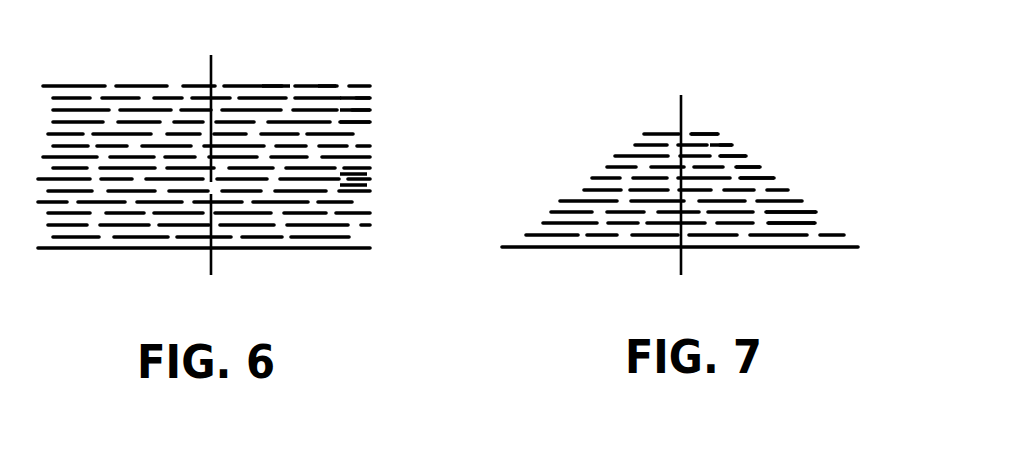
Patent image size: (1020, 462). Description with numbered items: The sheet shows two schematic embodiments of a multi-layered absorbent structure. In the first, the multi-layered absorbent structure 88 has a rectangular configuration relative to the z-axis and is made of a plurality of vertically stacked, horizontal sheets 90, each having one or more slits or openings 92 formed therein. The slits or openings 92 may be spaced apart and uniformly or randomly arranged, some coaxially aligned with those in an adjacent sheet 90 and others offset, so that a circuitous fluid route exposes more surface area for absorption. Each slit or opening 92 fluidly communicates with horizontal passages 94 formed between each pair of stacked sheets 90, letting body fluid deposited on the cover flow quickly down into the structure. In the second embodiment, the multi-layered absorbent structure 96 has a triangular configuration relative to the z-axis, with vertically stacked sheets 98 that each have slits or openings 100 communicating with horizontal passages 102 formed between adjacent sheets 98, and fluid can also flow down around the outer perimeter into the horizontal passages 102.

In FIG. 6, the multi-layered absorbent structure 88 is at (386, 55).
In FIG. 6, the sheet 90 is at (370, 98).
In FIG. 6, the slit or opening 92 is at (327, 86).
In FIG. 6, the horizontal passage 94 is at (367, 174).
In FIG. 7, the multi-layered absorbent structure 96 is at (777, 126).
In FIG. 7, the sheet 98 is at (744, 157).
In FIG. 7, the slit or opening 100 is at (713, 146).
In FIG. 7, the horizontal passage 102 is at (812, 215).